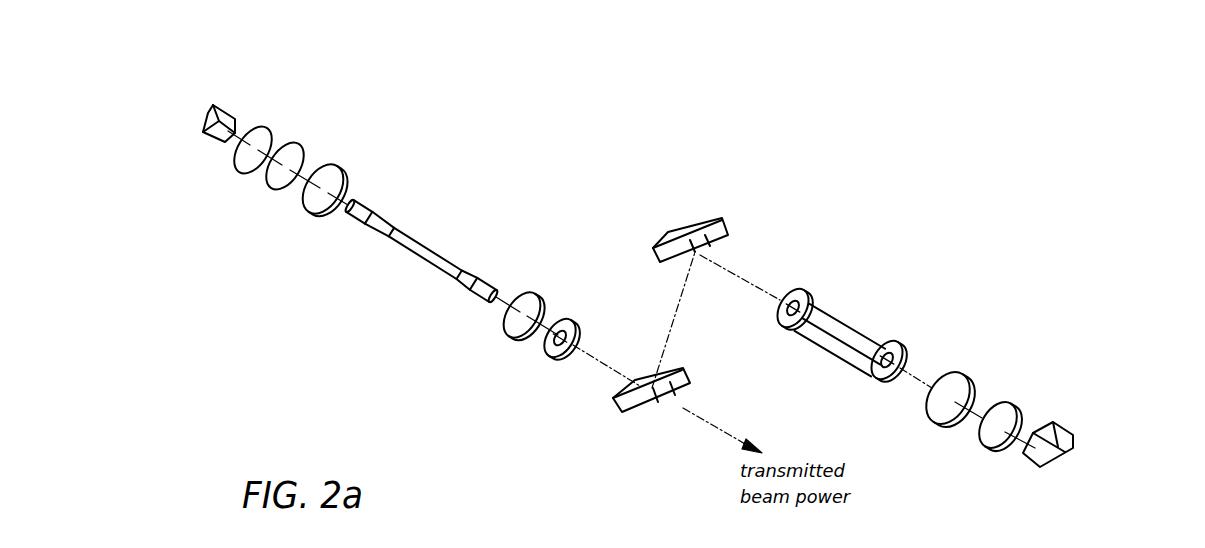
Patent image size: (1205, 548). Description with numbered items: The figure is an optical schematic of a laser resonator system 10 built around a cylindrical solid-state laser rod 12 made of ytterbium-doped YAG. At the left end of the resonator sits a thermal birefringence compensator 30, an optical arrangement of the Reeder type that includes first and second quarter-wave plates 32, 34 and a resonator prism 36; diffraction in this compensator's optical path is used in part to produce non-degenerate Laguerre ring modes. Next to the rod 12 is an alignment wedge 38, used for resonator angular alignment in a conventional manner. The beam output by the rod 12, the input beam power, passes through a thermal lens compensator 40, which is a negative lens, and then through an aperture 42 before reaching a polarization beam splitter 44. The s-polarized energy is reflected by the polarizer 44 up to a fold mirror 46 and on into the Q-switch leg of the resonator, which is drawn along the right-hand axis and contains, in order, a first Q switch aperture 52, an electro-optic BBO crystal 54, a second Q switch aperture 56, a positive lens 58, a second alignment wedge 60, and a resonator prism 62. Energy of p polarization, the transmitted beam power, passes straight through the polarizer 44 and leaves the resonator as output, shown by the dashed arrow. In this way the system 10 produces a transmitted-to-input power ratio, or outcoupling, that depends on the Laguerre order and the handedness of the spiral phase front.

The system 10 is at (843, 79).
The laser rod 12 is at (415, 257).
The thermal birefringence compensator 30 is at (190, 187).
The first quarter-wave plate 32 is at (290, 147).
The second quarter-wave plate 34 is at (258, 132).
The resonator prism 36 is at (207, 115).
The alignment wedge 38 is at (310, 207).
The thermal lens compensator 40 is at (518, 335).
The aperture 42 is at (555, 357).
The polarization beam splitter 44 is at (637, 400).
The fold mirror 46 is at (708, 225).
The first Q switch aperture 52 is at (800, 287).
The electro-optic crystal 54 is at (845, 330).
The second Q switch aperture 56 is at (905, 340).
The positive lens 58 is at (972, 377).
The alignment wedge 60 is at (1020, 408).
The resonator prism 62 is at (1073, 442).